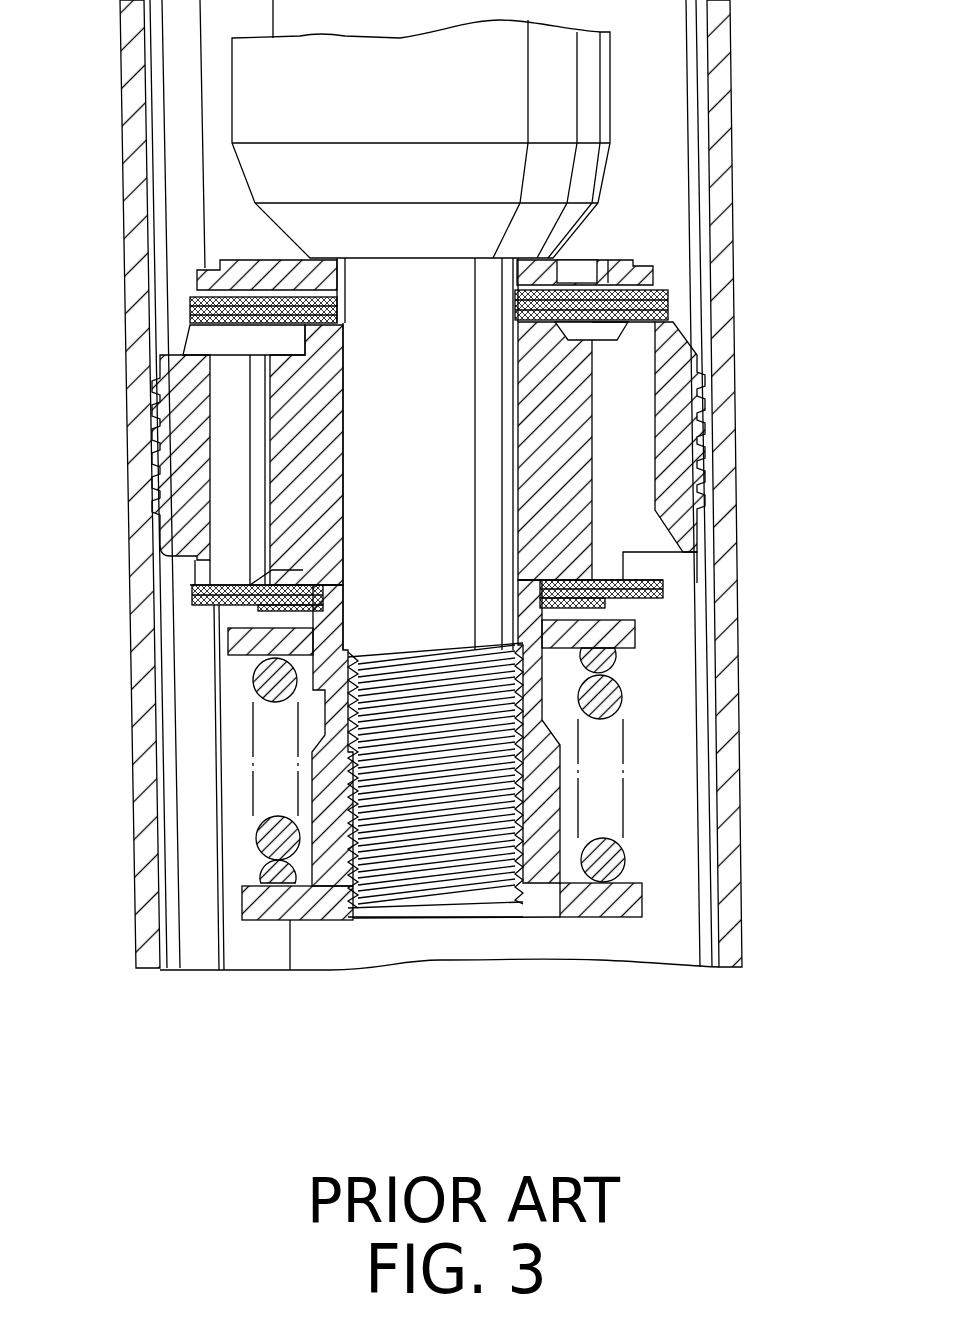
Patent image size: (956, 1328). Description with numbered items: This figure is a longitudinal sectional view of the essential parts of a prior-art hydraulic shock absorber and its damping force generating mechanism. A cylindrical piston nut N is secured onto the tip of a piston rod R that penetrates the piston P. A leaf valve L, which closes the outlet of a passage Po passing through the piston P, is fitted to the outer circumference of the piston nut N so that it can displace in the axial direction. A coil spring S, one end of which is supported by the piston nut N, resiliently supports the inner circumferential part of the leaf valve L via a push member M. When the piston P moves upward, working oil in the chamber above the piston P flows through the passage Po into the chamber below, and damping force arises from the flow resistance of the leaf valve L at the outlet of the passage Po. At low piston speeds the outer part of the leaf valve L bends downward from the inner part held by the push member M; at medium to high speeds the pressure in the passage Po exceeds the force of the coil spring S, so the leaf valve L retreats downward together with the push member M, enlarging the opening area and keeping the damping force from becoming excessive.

The piston P is at (183, 417).
The passage Po is at (233, 494).
The piston rod R is at (487, 397).
The leaf valve L is at (676, 578).
The push member M is at (633, 636).
The coil spring S is at (257, 828).
The piston nut N is at (608, 905).